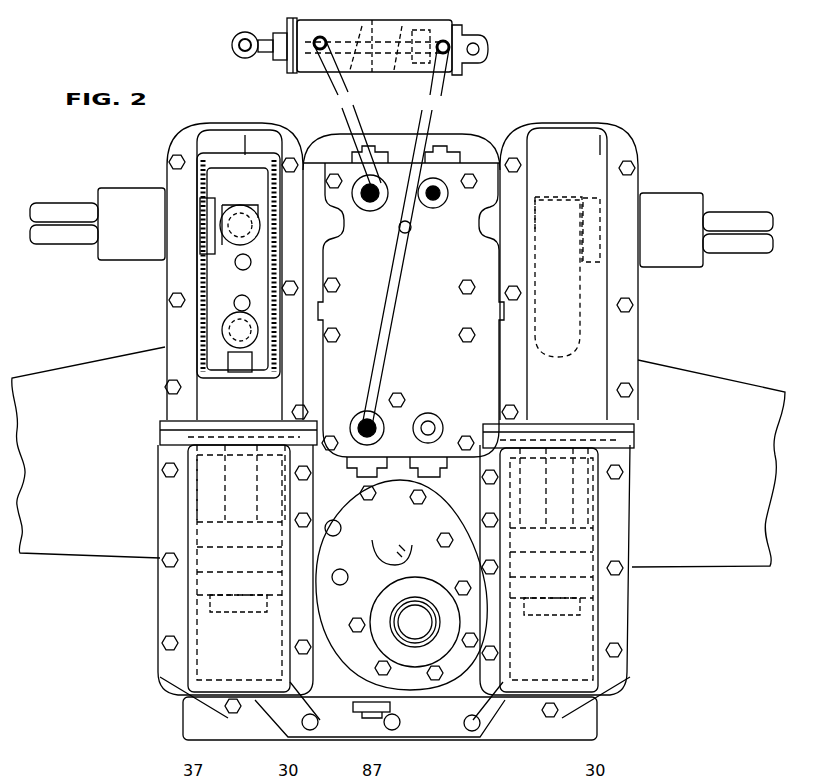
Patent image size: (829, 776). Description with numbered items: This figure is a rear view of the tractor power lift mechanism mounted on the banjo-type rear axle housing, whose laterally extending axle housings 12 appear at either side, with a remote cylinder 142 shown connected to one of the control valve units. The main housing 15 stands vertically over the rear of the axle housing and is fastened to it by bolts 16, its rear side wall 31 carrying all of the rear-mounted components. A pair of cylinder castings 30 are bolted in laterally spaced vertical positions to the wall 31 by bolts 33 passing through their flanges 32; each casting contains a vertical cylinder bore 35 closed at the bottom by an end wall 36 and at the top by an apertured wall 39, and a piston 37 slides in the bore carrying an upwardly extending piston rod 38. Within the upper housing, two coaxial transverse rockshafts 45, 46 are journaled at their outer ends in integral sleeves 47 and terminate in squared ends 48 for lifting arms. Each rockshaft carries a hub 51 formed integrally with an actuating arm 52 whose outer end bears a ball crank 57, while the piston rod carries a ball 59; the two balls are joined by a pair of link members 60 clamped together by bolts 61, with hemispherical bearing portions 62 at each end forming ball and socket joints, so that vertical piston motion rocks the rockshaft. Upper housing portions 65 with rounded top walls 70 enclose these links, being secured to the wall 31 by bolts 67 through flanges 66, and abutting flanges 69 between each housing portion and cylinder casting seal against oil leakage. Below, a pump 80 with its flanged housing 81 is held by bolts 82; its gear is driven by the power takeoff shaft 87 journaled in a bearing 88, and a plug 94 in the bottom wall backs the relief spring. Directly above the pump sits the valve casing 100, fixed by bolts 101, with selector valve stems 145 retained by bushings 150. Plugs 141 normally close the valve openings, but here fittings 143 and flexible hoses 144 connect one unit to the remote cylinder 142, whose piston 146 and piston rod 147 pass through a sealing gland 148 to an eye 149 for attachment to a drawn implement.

The axle housings 12 is at (85, 453).
The main housing 15 is at (493, 715).
The bolts 16 is at (465, 722).
The cylinder castings 30 is at (388, 699).
The rear side wall 31 is at (349, 692).
The flanges 32 is at (167, 605).
The bolts 33 is at (170, 552).
The cylinder bores 35 is at (196, 662).
The end walls 36 is at (226, 684).
The piston 37 is at (222, 614).
The piston rod 38 is at (258, 466).
The wall 39 is at (208, 447).
The rockshaft 45 is at (70, 204).
The rockshaft 46 is at (737, 210).
The sleeves 47 is at (142, 228).
The squared outer ends 48 is at (60, 236).
The hub 51 is at (234, 206).
The actuating arm 52 is at (210, 238).
The ball crank 57 is at (248, 205).
The ball 59 is at (222, 329).
The link members 60 is at (228, 277).
The bolts 61 is at (250, 300).
The hemispherical bearing portions 62 is at (230, 212).
The upper housing portions 65 is at (215, 140).
The flanges 66 is at (175, 182).
The bolts 67 is at (177, 156).
The abutting flanges 69 is at (160, 433).
The rounded top walls 70 is at (250, 136).
The pump 80 is at (432, 533).
The pump housing 81 is at (455, 557).
The bolts 82 is at (343, 570).
The power takeoff shaft 87 is at (404, 618).
The bearing 88 is at (417, 598).
The plug 94 is at (364, 716).
The valve casing 100 is at (430, 340).
The bolts 101 is at (338, 276).
The plugs 141 is at (433, 200).
The remote cylinder 142 is at (352, 64).
The fittings 143 is at (381, 176).
The flexible hoses 144 is at (421, 102).
The stem 145 is at (422, 132).
The piston 146 is at (472, 45).
The piston rod 147 is at (390, 37).
The sealing gland 148 is at (290, 30).
The eye 149 is at (232, 45).
The bushing 150 is at (354, 164).